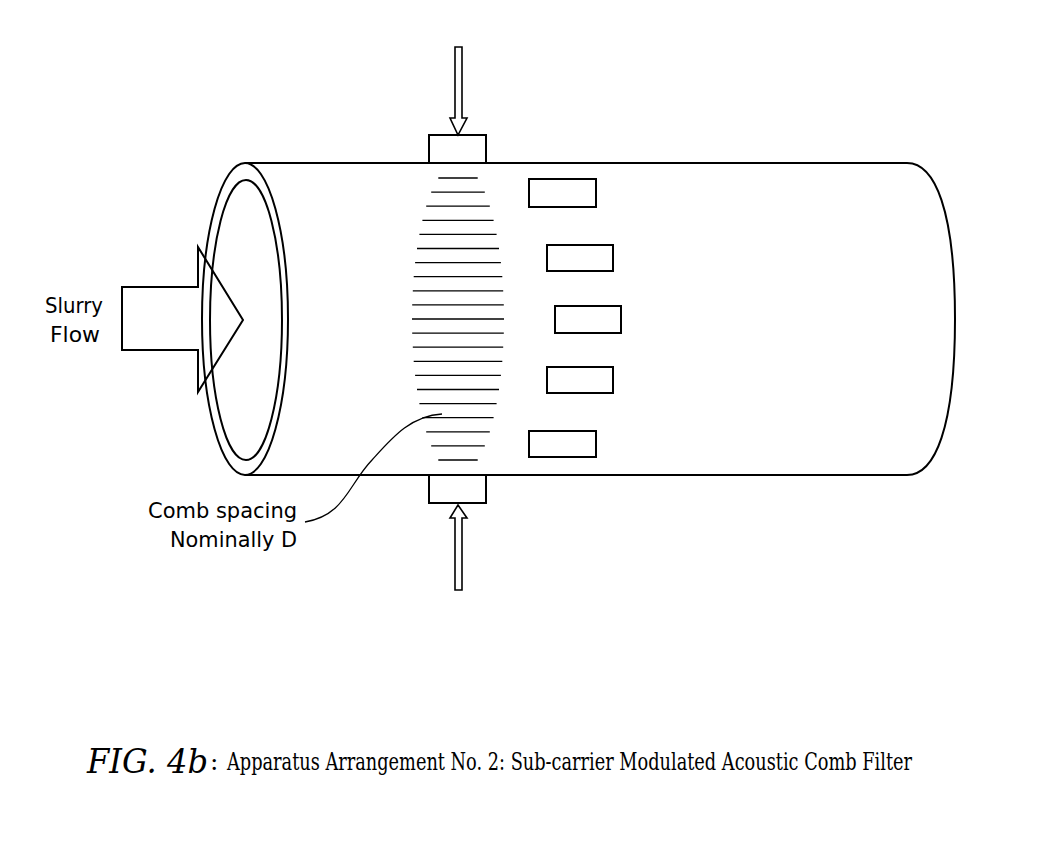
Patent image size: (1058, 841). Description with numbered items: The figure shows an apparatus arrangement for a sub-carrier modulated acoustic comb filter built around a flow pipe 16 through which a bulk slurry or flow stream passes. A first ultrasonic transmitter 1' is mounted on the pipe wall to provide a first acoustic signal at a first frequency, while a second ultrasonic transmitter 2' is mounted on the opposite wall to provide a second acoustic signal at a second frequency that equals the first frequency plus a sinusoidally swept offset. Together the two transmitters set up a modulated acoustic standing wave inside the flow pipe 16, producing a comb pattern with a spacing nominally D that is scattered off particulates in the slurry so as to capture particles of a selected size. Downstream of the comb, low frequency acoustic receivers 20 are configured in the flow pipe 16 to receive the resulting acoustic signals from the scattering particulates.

The second ultrasonic transmitter 2' is at (544, 87).
The first ultrasonic transmitter 1' is at (578, 551).
The low frequency (LF) acoustic receivers 20 is at (627, 457).
The flow pipe 16 is at (852, 475).